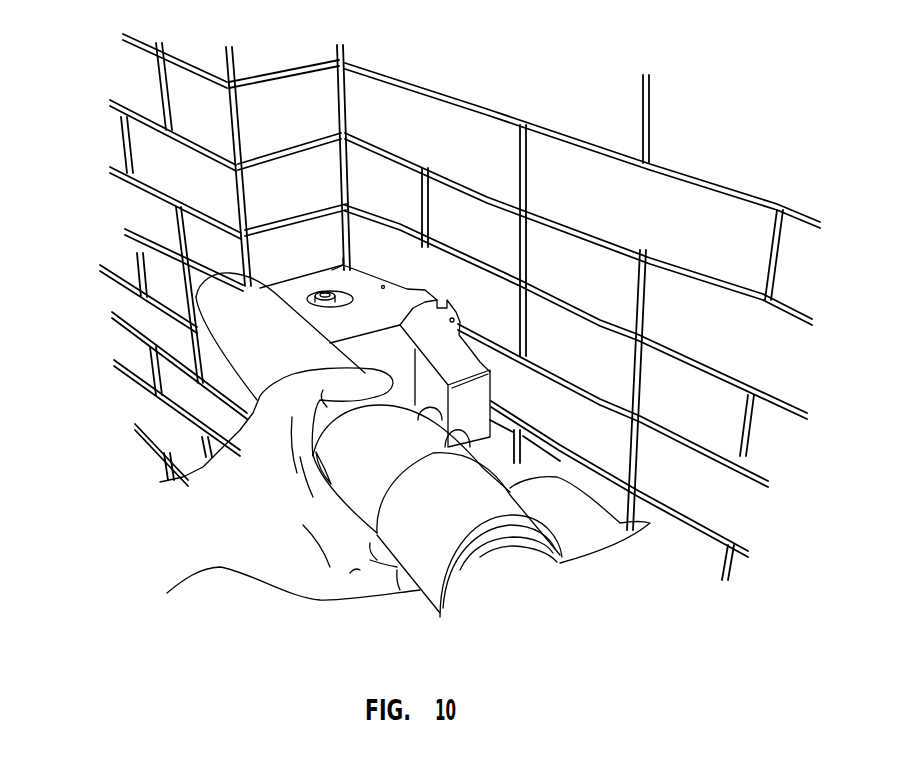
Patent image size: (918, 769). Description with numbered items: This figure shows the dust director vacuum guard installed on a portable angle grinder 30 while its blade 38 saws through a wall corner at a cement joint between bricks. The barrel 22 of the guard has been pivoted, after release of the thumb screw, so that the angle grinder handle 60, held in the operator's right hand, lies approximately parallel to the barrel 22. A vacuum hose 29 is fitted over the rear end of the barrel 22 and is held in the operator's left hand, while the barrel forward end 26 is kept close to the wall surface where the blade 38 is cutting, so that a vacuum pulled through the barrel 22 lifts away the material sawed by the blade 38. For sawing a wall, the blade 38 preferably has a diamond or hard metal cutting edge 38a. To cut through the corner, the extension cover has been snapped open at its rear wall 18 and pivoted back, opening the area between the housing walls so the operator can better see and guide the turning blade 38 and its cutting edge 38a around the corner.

The rear wall 18 is at (443, 300).
The barrel 22 is at (278, 357).
The barrel forward end 26 is at (196, 296).
The vacuum hose 29 is at (363, 480).
The angle grinder 30 is at (233, 384).
The angle grinder blade 38 is at (321, 281).
The cutting edge 38a is at (346, 266).
The angle grinder handle 60 is at (432, 543).